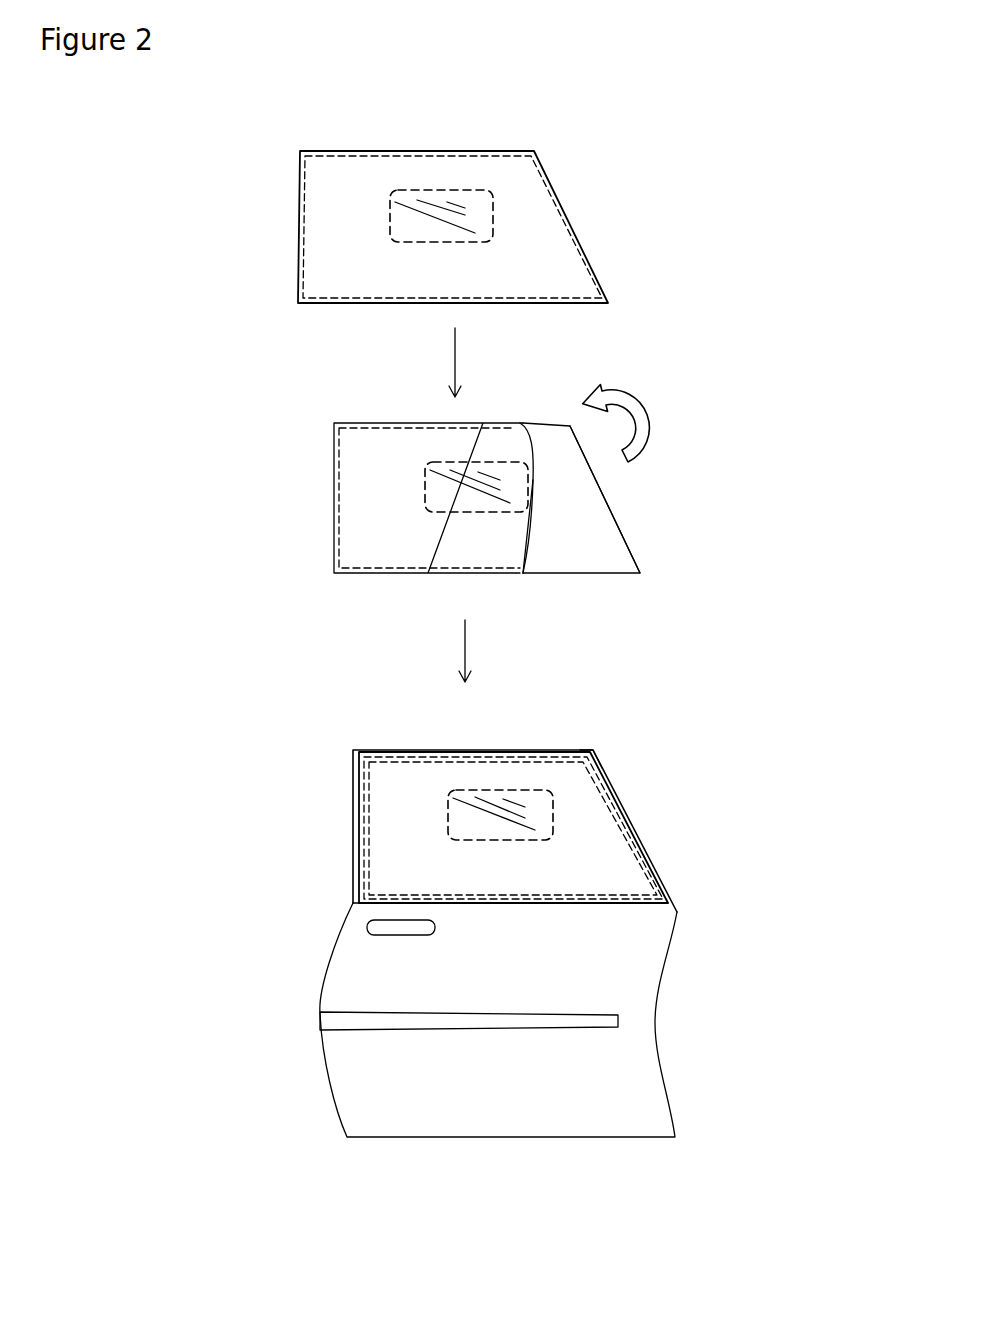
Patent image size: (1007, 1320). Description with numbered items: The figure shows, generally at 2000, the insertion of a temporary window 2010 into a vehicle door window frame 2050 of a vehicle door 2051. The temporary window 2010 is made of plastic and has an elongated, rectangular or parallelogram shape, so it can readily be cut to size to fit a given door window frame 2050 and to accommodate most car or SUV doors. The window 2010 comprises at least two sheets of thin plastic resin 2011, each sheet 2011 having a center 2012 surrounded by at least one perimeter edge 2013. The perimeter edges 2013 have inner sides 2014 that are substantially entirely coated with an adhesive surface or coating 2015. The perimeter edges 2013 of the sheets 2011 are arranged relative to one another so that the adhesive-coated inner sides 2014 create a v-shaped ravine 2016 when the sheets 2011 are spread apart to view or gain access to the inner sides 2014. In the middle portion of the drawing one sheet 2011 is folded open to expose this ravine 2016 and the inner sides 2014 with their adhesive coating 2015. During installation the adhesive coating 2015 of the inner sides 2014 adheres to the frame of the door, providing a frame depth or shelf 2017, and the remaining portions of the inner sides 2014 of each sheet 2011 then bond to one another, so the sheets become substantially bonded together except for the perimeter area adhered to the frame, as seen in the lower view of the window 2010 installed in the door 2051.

The insertion of temporary window into vehicle door window frame 2000 is at (96, 191).
The temporary window 2010 is at (344, 190).
The sheet of thin plastic resin 2011 is at (525, 171).
The center 2012 is at (443, 215).
The perimeter edge 2013 is at (333, 268).
The inner side 2014 is at (550, 233).
The adhesive surface/coating 2015 is at (550, 282).
The v-shaped ravine 2016 is at (545, 560).
The frame depth/shelf 2017 is at (588, 753).
The vehicle door window frame 2050 is at (610, 773).
The vehicle door 2051 is at (632, 950).